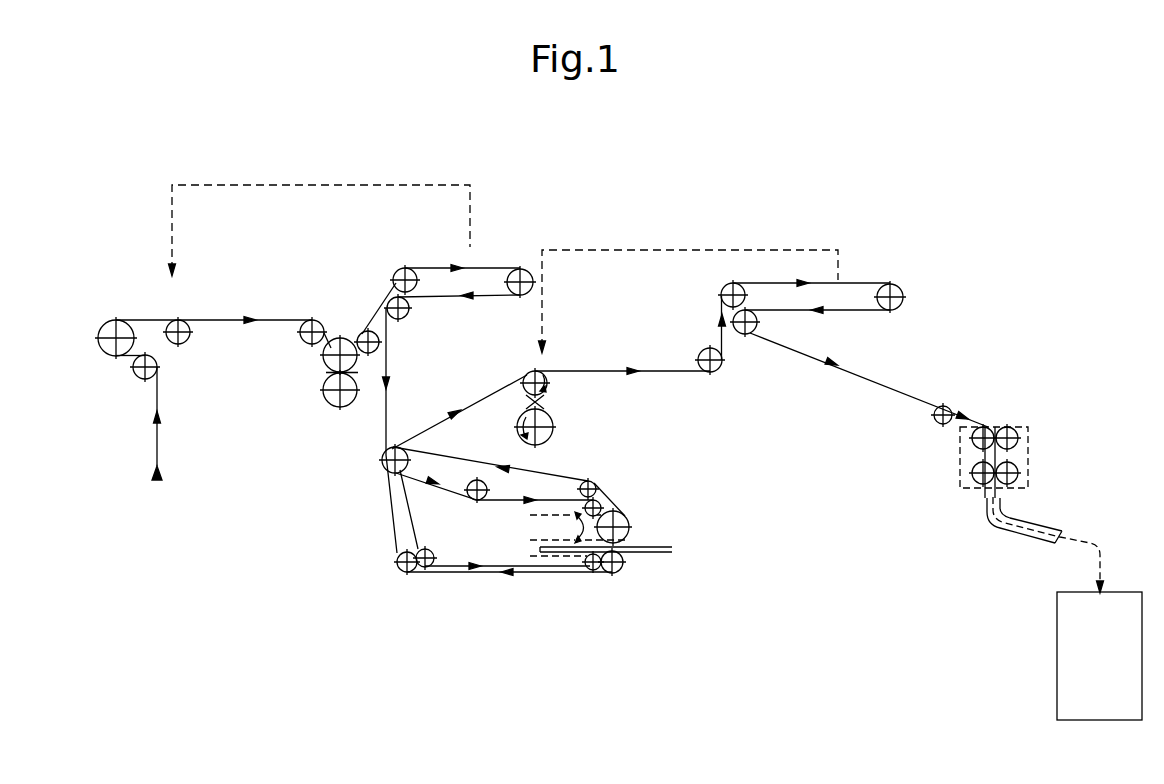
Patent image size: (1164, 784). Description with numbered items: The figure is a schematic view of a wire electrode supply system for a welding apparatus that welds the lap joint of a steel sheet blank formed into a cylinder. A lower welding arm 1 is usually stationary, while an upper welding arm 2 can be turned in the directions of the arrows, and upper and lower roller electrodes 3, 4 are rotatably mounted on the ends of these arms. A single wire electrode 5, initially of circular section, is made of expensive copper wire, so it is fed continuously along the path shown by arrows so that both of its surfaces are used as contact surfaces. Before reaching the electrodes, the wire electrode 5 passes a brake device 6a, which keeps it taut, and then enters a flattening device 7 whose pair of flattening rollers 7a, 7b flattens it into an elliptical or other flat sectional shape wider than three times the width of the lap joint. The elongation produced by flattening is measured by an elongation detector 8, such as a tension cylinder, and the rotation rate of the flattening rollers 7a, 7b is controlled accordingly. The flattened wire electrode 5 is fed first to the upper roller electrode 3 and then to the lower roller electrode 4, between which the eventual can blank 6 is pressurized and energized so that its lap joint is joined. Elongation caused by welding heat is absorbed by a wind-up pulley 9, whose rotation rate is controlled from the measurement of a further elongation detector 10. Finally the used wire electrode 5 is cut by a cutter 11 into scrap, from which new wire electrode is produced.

The lower welding arm 1 is at (567, 560).
The upper welding arm 2 is at (552, 518).
The upper roller electrode 3 is at (625, 517).
The lower roller electrode 4 is at (623, 567).
The wire electrode 5 is at (157, 442).
The eventual can blank 6 is at (653, 547).
The brake device 6a is at (106, 322).
The flattening device 7 is at (323, 347).
The flattening roller 7a is at (339, 335).
The flattening roller 7b is at (332, 397).
The elongation detector 8 is at (473, 267).
The wind-up pulley 9 is at (540, 368).
The elongation detector 10 is at (788, 280).
The cutter 11 is at (993, 420).